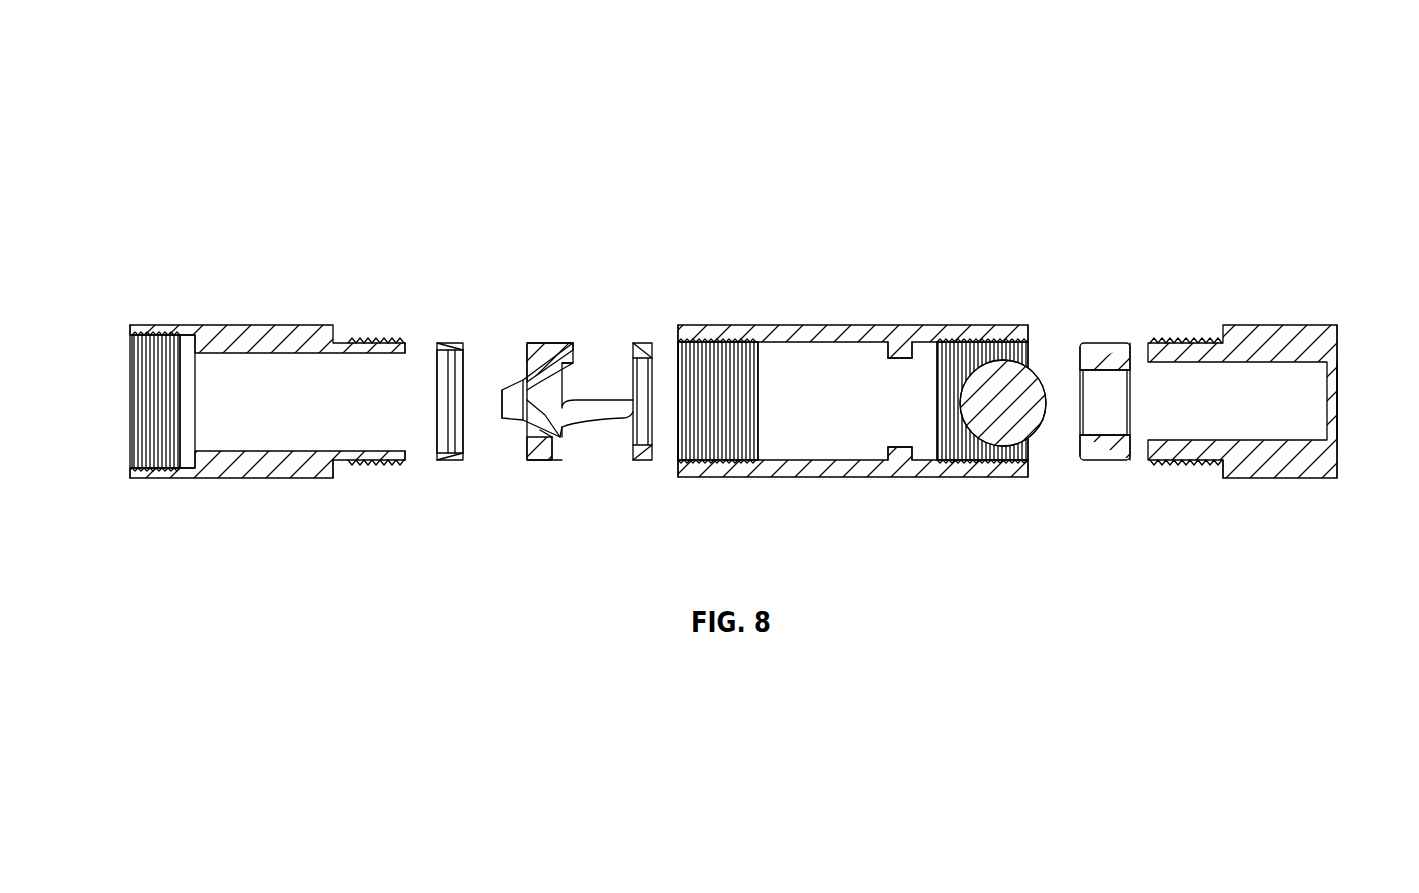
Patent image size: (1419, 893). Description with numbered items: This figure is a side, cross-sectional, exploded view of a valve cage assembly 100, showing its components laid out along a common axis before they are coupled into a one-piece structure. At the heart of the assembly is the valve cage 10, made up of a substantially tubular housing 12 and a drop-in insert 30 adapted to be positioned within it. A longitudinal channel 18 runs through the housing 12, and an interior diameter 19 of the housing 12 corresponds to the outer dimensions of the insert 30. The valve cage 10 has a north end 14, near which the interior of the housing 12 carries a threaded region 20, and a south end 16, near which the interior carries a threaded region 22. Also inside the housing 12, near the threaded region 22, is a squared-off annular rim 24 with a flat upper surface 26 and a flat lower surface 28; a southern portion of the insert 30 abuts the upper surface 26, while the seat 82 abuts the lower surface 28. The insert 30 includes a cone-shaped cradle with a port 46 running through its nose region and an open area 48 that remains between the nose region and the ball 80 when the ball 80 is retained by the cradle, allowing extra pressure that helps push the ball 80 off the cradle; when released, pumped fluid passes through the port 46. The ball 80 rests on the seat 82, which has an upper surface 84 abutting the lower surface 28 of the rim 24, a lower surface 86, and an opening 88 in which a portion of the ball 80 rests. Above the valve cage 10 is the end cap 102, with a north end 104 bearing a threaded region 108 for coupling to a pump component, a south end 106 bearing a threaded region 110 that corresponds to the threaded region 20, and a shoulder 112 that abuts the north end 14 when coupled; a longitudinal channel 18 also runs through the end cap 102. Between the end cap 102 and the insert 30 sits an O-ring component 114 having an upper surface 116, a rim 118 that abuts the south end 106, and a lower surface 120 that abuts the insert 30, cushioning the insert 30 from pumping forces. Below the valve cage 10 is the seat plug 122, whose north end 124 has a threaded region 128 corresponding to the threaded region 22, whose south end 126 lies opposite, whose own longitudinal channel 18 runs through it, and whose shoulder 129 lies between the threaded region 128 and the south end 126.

The valve cage assembly 100 is at (1258, 101).
The valve cage 10 is at (515, 228).
The housing 12 is at (818, 325).
The north end 14 is at (668, 327).
The south end 16 is at (1037, 325).
The longitudinal channel 18 is at (126, 393).
The interior diameter 19 is at (815, 462).
The threaded region 20 is at (727, 325).
The threaded region 22 is at (948, 325).
The annular rim 24 is at (900, 462).
The upper surface 26 is at (890, 450).
The lower surface 28 is at (920, 462).
The drop-in insert 30 is at (565, 340).
The port 46 is at (500, 397).
The open area 48 is at (548, 440).
The ball 80 is at (1000, 425).
The seat 82 is at (1120, 462).
The upper surface 84 is at (1070, 352).
The lower surface 86 is at (1140, 352).
The opening 88 is at (1088, 460).
The end cap 102 is at (240, 322).
The north end 104 is at (130, 475).
The south end 106 is at (408, 455).
The threaded region 108 is at (170, 468).
The threaded region 110 is at (372, 462).
The shoulder 112 is at (340, 462).
The O-ring component 114 is at (450, 340).
The upper surface 116 is at (437, 355).
The rim 118 is at (448, 380).
The lower surface 120 is at (463, 347).
The seat plug 122 is at (1268, 320).
The north end 124 is at (1156, 340).
The south end 126 is at (1340, 343).
The threaded region 128 is at (1165, 468).
The shoulder 129 is at (1220, 478).